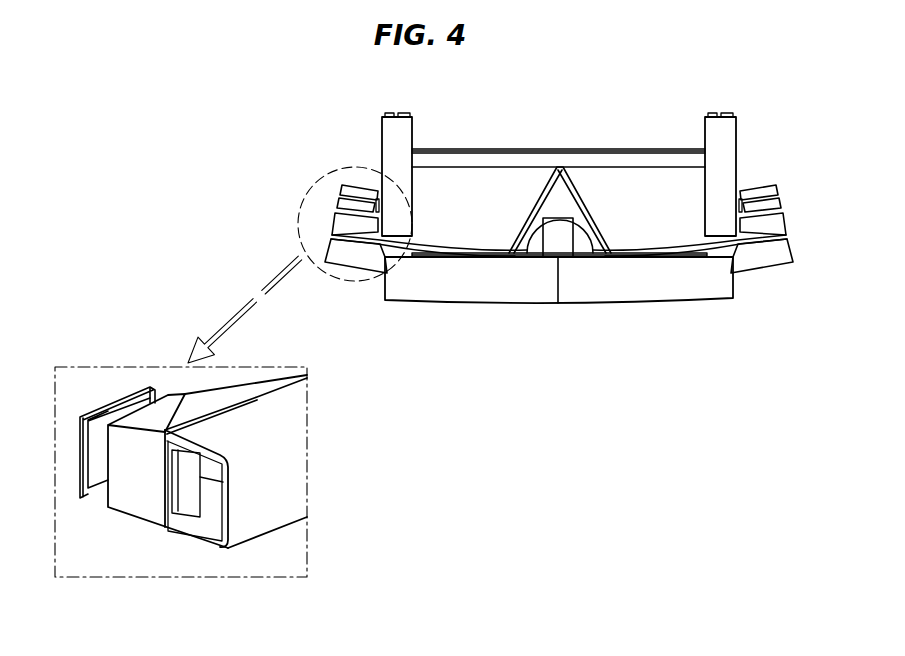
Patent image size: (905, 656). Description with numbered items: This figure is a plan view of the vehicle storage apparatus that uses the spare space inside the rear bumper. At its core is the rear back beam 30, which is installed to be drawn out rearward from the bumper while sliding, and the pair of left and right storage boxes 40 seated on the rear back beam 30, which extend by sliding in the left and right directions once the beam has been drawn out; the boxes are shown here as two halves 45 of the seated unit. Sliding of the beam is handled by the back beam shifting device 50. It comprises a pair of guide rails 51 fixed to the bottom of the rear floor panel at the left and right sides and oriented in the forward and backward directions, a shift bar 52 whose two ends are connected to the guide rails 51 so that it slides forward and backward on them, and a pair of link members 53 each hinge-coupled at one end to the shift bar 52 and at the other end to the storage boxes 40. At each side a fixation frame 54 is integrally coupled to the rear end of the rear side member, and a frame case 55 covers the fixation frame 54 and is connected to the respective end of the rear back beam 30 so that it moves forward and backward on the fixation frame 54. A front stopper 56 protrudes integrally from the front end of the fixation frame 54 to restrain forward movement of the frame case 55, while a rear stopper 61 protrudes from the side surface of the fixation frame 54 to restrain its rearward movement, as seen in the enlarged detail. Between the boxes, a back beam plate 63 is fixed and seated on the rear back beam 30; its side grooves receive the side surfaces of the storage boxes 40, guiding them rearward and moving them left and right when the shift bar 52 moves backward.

The rear back beam 30 is at (370, 263).
The storage boxes 40 is at (556, 303).
The base plate half 45 is at (503, 289).
The back beam shifting device 50 is at (703, 138).
The guide rails 51 is at (388, 137).
The shift bar 52 is at (470, 150).
The link members 53 is at (573, 178).
The fixation frames 54 is at (350, 202).
The frame cases 55 is at (355, 241).
The front stopper 56 is at (352, 187).
The rear stopper 61 is at (172, 493).
The back beam plate 63 is at (567, 252).